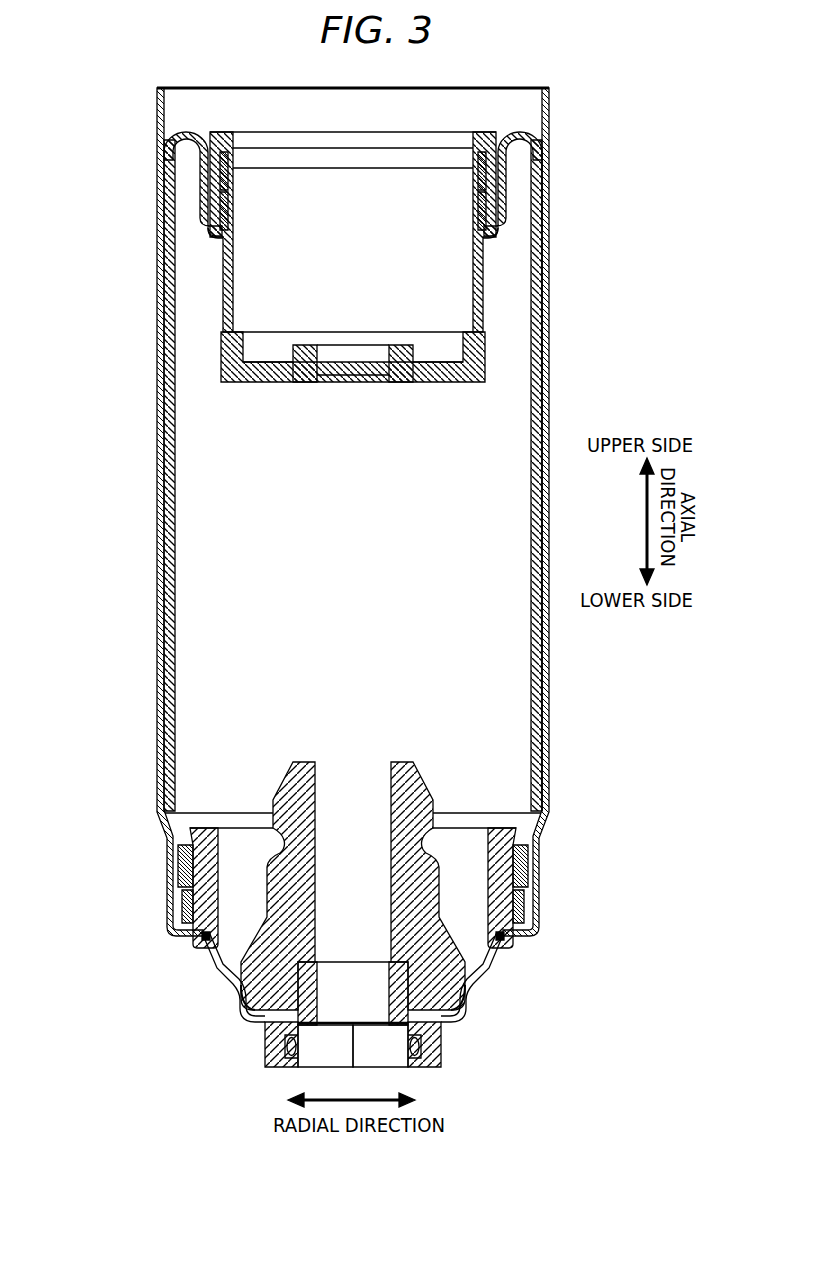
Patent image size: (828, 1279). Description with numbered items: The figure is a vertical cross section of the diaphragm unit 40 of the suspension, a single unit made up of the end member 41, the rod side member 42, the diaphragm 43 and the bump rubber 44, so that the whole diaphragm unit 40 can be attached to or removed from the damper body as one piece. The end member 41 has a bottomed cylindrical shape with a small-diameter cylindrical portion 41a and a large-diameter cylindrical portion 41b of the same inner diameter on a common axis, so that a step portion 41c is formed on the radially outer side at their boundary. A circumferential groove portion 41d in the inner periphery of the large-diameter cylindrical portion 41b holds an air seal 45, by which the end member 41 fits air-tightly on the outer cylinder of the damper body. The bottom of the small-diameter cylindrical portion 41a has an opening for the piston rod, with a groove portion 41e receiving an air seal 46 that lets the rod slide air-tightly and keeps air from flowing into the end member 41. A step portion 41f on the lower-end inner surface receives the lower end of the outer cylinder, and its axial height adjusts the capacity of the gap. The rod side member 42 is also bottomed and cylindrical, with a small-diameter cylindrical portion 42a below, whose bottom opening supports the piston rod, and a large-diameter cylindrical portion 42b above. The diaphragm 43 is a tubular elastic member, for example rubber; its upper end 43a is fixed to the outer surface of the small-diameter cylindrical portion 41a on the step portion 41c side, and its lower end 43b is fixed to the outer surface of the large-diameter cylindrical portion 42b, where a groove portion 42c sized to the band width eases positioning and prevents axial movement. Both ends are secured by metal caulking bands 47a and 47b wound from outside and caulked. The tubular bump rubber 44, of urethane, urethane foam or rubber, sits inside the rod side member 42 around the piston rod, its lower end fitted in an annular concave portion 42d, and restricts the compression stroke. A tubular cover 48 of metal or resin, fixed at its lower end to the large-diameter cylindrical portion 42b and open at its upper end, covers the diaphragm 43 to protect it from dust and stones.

The diaphragm unit 40 is at (90, 452).
The end member 41 is at (97, 118).
The small-diameter cylindrical portion 41a is at (213, 176).
The large-diameter cylindrical portion 41b is at (182, 135).
The step portion 41c is at (212, 192).
The groove portion 41d is at (497, 132).
The groove portion 41e is at (296, 378).
The step portion 41f is at (225, 325).
The rod side member 42 is at (612, 905).
The small-diameter cylindrical portion 42a is at (472, 988).
The large-diameter cylindrical portion 42b is at (497, 915).
The groove portion 42c is at (517, 860).
The annular concave portion 42d is at (265, 1020).
The diaphragm 43 is at (165, 497).
The upper end 43a is at (210, 244).
The lower end 43b is at (185, 905).
The bump rubber 44 is at (263, 993).
The air seal 45 is at (542, 168).
The air seal 46 is at (396, 378).
The caulking band 47a is at (210, 205).
The caulking band 47b is at (180, 862).
The cover 48 is at (167, 570).